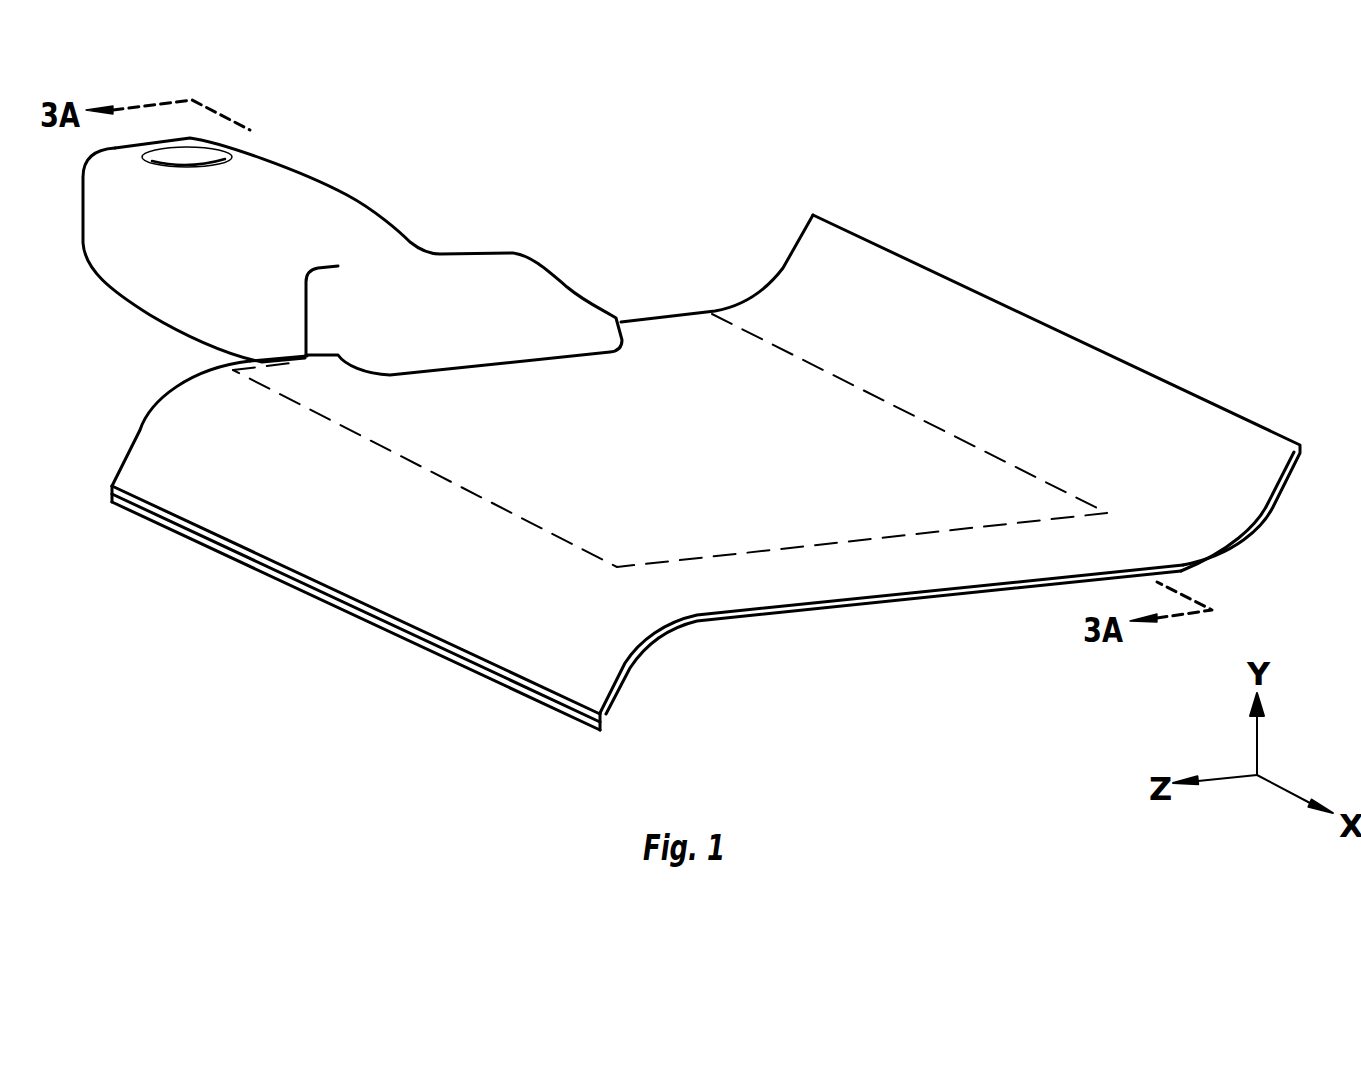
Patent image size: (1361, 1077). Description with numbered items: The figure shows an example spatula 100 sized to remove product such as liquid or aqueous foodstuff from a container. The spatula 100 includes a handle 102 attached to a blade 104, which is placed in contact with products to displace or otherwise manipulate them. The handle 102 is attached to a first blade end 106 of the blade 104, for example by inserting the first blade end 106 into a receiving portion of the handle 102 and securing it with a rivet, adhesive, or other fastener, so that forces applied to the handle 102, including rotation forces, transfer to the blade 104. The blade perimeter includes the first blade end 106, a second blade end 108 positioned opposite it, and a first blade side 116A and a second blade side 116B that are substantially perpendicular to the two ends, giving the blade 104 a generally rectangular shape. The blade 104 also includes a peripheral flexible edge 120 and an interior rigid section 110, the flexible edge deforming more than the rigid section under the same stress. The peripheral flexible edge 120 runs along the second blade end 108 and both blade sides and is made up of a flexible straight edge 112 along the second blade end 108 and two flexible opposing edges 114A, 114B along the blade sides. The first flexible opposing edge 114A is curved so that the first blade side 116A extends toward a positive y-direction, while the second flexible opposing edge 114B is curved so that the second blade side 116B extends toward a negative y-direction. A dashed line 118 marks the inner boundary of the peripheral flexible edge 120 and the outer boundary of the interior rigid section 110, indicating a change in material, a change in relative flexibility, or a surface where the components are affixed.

The spatula 100 is at (899, 54).
The handle 102 is at (318, 202).
The blade 104 is at (1221, 368).
The first blade end 106 is at (688, 301).
The second blade end 108 is at (937, 606).
The interior rigid section 110 is at (506, 427).
The flexible straight edge 112 is at (670, 446).
The first flexible opposing edge 114A is at (1030, 378).
The second flexible opposing edge 114B is at (380, 510).
The first blade side 116A is at (1008, 283).
The second blade side 116B is at (399, 655).
The dashed line 118 is at (670, 562).
The peripheral flexible edge 120 is at (962, 383).